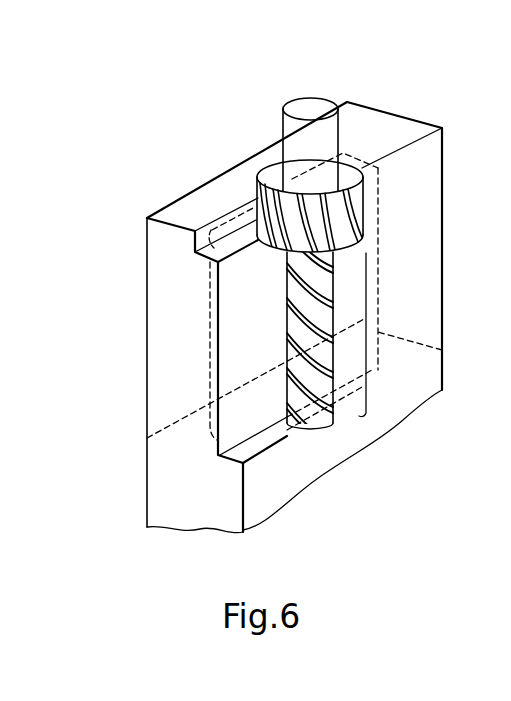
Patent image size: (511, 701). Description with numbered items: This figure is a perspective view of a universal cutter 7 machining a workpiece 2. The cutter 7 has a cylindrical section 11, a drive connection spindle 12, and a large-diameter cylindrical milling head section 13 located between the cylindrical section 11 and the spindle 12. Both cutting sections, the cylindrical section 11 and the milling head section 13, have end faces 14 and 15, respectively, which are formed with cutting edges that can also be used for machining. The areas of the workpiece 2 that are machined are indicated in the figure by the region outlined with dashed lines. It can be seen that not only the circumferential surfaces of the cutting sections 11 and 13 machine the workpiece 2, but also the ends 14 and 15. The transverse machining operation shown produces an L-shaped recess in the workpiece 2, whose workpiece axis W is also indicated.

The workpiece 2 is at (165, 248).
The universal cutter 7 is at (313, 311).
The cylindrical section 11 is at (377, 332).
The drive connection spindle 12 is at (322, 140).
The large-diameter cylindrical milling head section 13 is at (395, 231).
The face 14 is at (317, 423).
The face 15 is at (262, 257).
The workpiece axis W is at (509, 399).